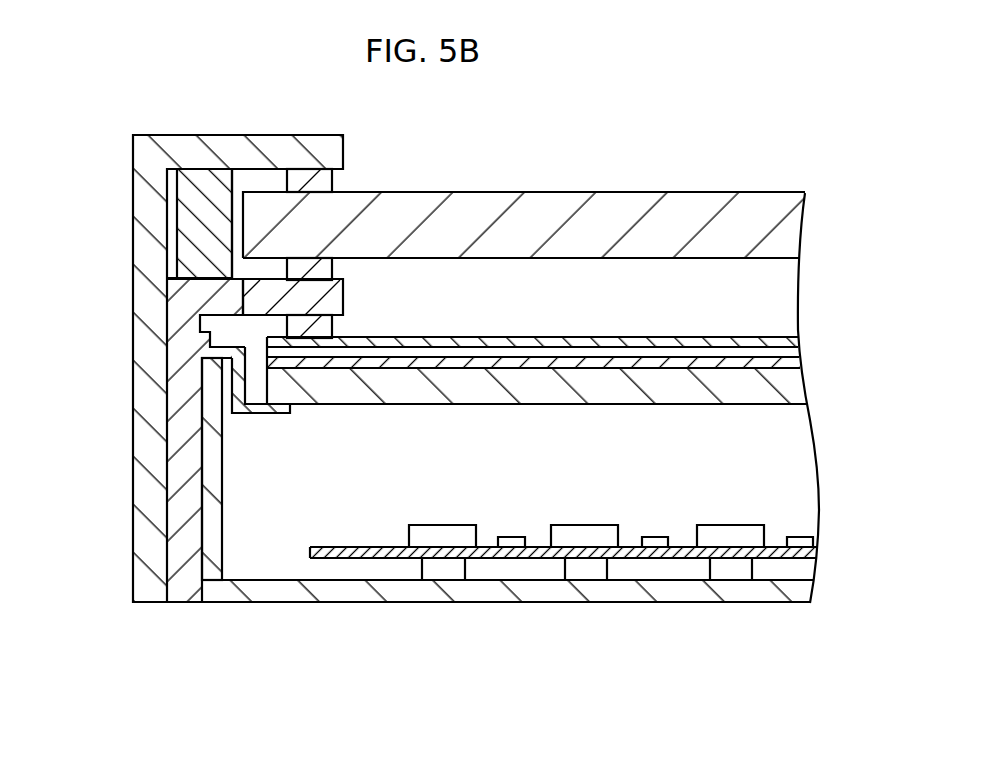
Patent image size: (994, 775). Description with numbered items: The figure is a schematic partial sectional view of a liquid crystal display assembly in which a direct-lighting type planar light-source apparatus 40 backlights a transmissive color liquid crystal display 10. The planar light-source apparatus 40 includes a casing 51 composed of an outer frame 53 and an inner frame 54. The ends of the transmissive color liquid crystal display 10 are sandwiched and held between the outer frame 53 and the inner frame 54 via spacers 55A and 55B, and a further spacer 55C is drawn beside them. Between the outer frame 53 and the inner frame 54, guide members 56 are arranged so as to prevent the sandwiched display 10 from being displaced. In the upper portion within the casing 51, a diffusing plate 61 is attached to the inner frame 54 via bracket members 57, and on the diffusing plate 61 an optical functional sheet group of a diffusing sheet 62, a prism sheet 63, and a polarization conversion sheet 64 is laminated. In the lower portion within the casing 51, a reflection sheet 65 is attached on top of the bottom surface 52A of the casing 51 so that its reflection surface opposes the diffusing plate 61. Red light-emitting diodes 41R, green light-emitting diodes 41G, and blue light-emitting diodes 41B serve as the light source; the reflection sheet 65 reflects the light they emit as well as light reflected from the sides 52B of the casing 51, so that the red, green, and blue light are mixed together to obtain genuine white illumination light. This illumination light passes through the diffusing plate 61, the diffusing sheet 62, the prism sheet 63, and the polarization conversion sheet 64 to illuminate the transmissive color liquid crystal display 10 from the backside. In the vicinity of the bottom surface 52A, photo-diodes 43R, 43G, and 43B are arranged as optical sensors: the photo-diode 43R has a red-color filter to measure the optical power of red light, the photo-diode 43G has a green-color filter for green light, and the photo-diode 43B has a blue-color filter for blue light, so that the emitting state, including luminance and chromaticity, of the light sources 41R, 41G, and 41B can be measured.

The planar light-source apparatus 40 is at (291, 125).
The transmissive color liquid crystal display 10 is at (478, 204).
The casing 51 is at (222, 634).
The bottom surface of the casing 52A is at (338, 588).
The sides of the casing 52B is at (213, 467).
The outer frame 53 is at (150, 343).
The inner frame 54 is at (172, 515).
The spacer 55A is at (323, 180).
The spacer 55B is at (323, 268).
The cushion member 55C is at (318, 327).
The guide member 56 is at (190, 207).
The bracket member 57 is at (283, 408).
The diffusing plate 61 is at (428, 386).
The diffusing sheet 62 is at (606, 366).
The prism sheet 63 is at (592, 355).
The polarization conversion sheet 64 is at (526, 345).
The reflection sheet 65 is at (529, 560).
The green light-emitting diode 41G is at (440, 536).
The red light-emitting diode 41R is at (578, 536).
The blue light-emitting diode 41B is at (728, 538).
The photo-diode 43R is at (503, 542).
The photo-diode 43G is at (660, 550).
The photo-diode 43B is at (797, 562).